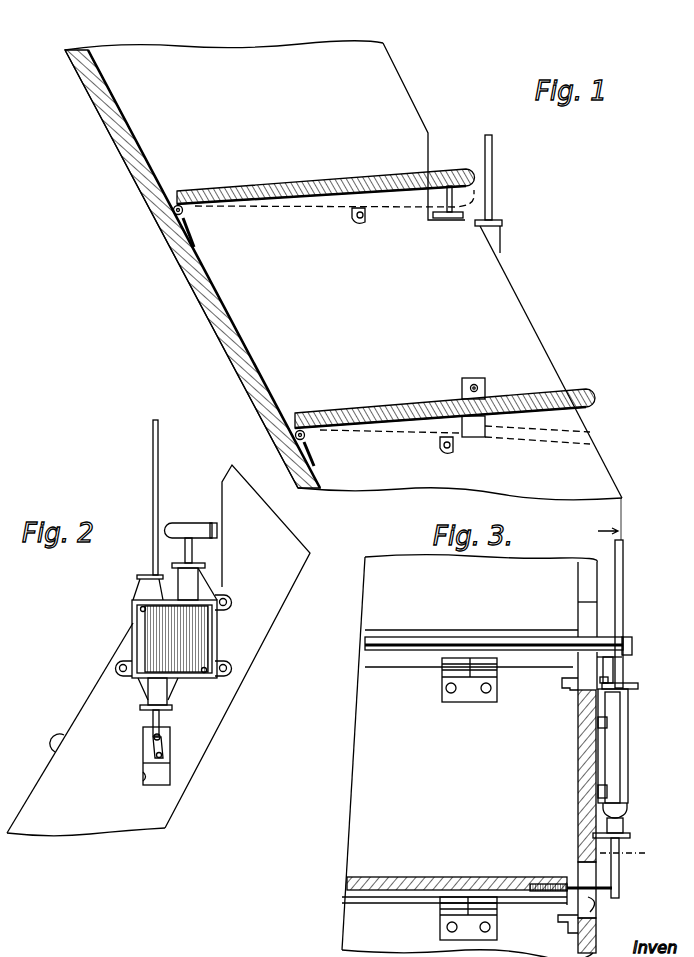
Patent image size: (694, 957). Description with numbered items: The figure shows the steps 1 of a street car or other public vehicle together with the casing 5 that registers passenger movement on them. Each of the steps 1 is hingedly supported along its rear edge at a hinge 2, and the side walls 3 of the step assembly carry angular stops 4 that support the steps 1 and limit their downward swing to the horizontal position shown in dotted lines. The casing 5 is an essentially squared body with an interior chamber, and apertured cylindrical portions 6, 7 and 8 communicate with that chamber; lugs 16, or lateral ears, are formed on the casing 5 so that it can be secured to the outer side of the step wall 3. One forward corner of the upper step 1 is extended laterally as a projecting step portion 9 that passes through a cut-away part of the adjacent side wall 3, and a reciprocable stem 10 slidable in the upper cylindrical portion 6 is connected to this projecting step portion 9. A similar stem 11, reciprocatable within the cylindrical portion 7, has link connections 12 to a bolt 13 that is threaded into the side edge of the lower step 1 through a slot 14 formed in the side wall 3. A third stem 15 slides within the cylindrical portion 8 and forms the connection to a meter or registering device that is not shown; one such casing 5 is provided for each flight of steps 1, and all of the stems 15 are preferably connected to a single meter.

In FIG. 1, the steps 1 is at (342, 186).
In FIG. 3, the steps 1 is at (430, 641).
In FIG. 1, the hinge 2 is at (188, 224).
In FIG. 3, the hinge 2 is at (470, 699).
In FIG. 1, the side walls 3 is at (343, 270).
In FIG. 2, the side walls 3 is at (158, 650).
In FIG. 3, the side walls 3 is at (582, 622).
In FIG. 1, the angular stops 4 is at (351, 216).
In FIG. 3, the angular stops 4 is at (613, 526).
In FIG. 2, the casing 5 is at (218, 638).
In FIG. 3, the casing 5 is at (615, 770).
In FIG. 2, the upper cylindrical portion 6 is at (192, 583).
In FIG. 3, the upper cylindrical portion 6 is at (636, 690).
In FIG. 2, the cylindrical portion 7 is at (145, 709).
In FIG. 3, the cylindrical portion 7 is at (624, 823).
In FIG. 1, the cylindrical portion 8 is at (500, 237).
In FIG. 2, the cylindrical portion 8 is at (145, 591).
In FIG. 3, the cylindrical portion 8 is at (622, 708).
In FIG. 2, the projecting step portion 9 is at (182, 531).
In FIG. 3, the projecting step portion 9 is at (633, 646).
In FIG. 2, the reciprocable stem 10 is at (195, 554).
In FIG. 3, the reciprocable stem 10 is at (632, 668).
In FIG. 3, the stem 11 is at (628, 841).
In FIG. 3, the link connections 12 is at (622, 887).
In FIG. 3, the bolt 13 is at (595, 906).
In FIG. 2, the slot 14 is at (143, 773).
In FIG. 2, the stem 15 is at (152, 450).
In FIG. 2, the lugs 16 is at (229, 603).